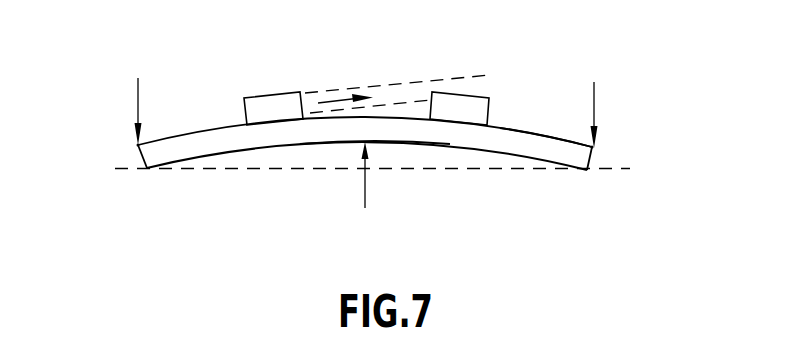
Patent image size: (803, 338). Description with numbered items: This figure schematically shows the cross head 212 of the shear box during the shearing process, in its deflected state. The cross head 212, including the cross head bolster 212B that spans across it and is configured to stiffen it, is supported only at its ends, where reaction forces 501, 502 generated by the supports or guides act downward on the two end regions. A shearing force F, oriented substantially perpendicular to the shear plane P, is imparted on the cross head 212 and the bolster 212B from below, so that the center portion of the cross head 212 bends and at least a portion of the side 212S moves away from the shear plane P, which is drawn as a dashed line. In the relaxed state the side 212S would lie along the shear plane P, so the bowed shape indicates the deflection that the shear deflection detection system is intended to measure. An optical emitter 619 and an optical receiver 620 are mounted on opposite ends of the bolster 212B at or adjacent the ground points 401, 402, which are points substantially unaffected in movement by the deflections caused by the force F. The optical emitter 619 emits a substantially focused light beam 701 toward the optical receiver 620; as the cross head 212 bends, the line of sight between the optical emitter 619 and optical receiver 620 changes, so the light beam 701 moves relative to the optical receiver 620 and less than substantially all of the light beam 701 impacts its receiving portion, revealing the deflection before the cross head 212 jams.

The cross head 212 is at (200, 133).
The cross head bolster 212B is at (540, 130).
The side of the cross head 212S is at (478, 152).
The ground point 401 is at (136, 145).
The ground point 402 is at (594, 148).
The reaction force 501 is at (137, 99).
The reaction force 502 is at (596, 99).
The optical emitter 619 is at (267, 105).
The optical receiver 620 is at (452, 104).
The light beam 701 is at (383, 85).
The shearing force F is at (373, 175).
The shear plane P is at (622, 171).